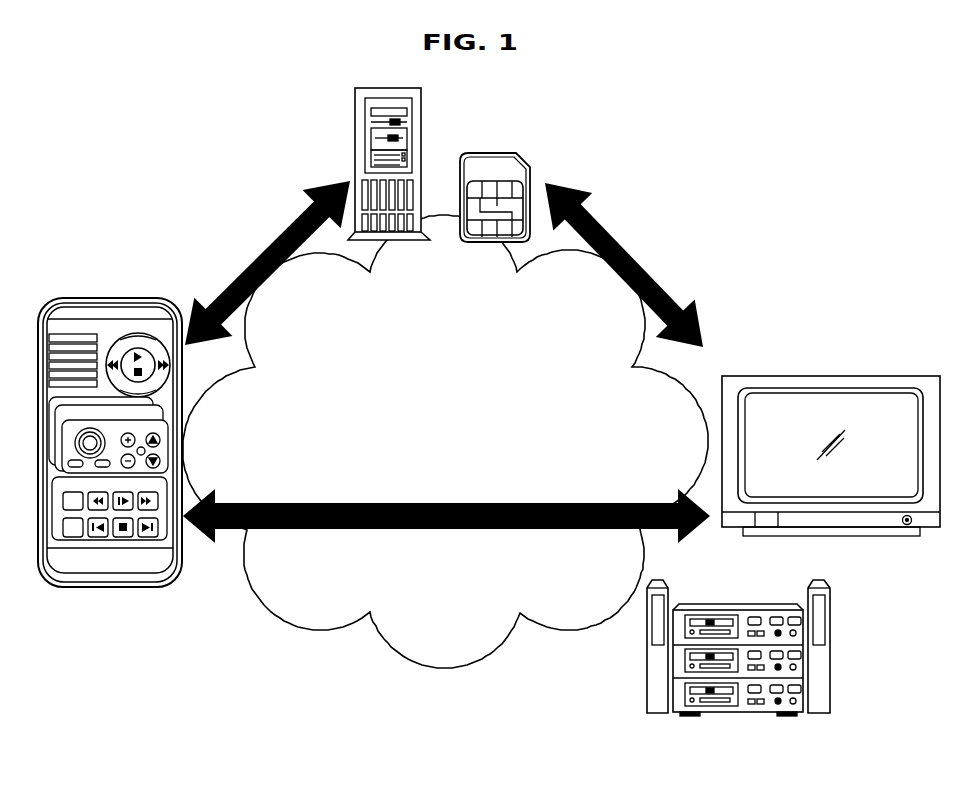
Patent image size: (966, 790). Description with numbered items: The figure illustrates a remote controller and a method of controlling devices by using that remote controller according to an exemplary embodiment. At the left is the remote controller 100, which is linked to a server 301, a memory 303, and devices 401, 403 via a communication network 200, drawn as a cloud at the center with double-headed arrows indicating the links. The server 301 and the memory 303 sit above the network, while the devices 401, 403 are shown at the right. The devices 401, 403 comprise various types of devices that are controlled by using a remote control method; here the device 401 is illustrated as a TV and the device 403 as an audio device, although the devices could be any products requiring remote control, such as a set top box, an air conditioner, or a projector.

The remote controller 100 is at (110, 298).
The communication network 200 is at (443, 670).
The server 301 is at (388, 88).
The memory 303 is at (495, 153).
The device 401 is at (831, 376).
The device 403 is at (833, 648).